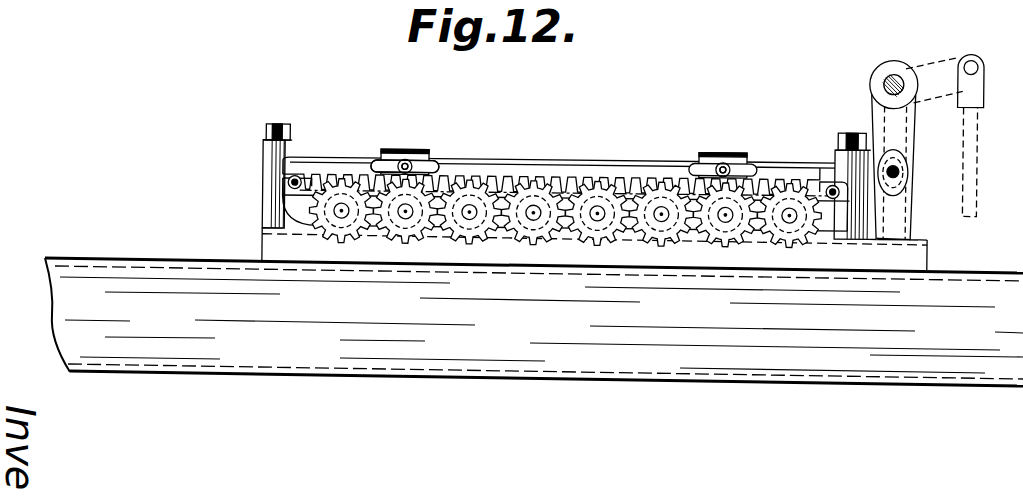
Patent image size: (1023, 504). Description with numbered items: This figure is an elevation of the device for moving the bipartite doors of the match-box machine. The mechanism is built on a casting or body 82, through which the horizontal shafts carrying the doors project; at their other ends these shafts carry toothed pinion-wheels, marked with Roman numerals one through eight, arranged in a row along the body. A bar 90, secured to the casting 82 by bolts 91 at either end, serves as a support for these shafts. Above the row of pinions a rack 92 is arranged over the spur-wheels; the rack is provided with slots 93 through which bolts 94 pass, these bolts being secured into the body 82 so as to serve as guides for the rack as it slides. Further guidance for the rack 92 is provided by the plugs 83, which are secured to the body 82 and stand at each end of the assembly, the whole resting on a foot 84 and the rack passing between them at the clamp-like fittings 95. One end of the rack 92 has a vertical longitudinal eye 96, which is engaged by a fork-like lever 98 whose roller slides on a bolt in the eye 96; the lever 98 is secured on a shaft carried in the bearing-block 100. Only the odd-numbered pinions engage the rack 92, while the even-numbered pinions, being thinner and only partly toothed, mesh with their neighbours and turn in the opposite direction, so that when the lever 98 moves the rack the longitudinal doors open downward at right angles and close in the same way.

The body 82 is at (286, 212).
The plugs 83 is at (276, 150).
The base 84 is at (268, 243).
The bar 90 is at (569, 223).
The bolts 91 is at (289, 183).
The rack 92 is at (571, 163).
The slots 93 is at (439, 166).
The bolts 94 is at (898, 163).
The clamp 95 is at (413, 148).
The eye 96 is at (908, 186).
The lever 98 is at (904, 113).
The bearing-block 100 is at (903, 207).